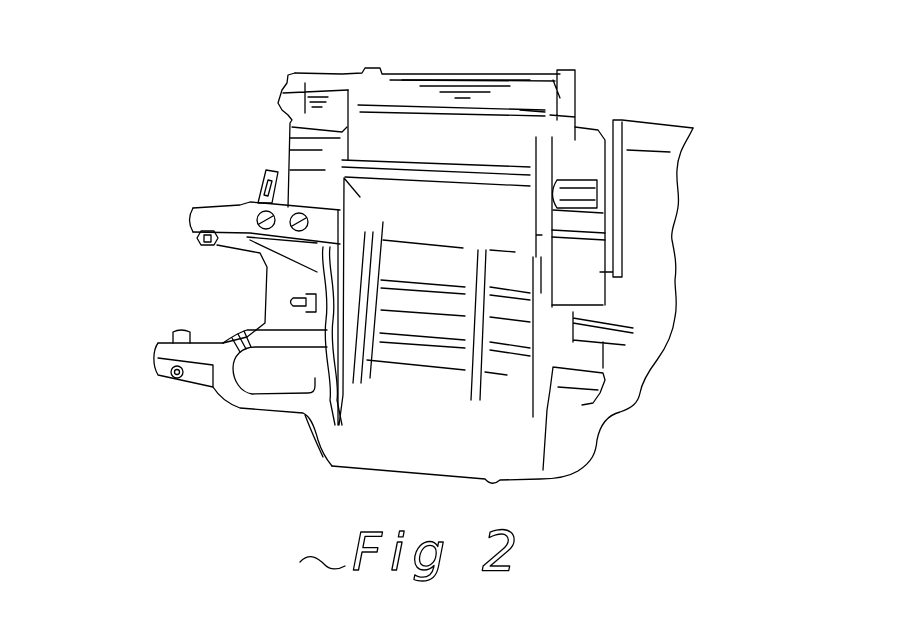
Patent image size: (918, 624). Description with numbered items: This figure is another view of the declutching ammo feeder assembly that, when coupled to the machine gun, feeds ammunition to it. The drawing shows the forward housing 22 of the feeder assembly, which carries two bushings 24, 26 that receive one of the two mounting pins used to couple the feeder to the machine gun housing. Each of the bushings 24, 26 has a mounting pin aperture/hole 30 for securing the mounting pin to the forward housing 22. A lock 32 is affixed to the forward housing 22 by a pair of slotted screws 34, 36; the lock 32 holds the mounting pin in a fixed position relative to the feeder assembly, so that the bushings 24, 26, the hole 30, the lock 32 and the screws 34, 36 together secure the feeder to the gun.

The forward housing 22 is at (373, 68).
The bushing 24 is at (190, 235).
The bushing 26 is at (172, 333).
The mounting pin aperture/hole 30 is at (175, 377).
The lock 32 is at (262, 177).
The slotted screw 34 is at (290, 222).
The slotted screw 36 is at (245, 238).